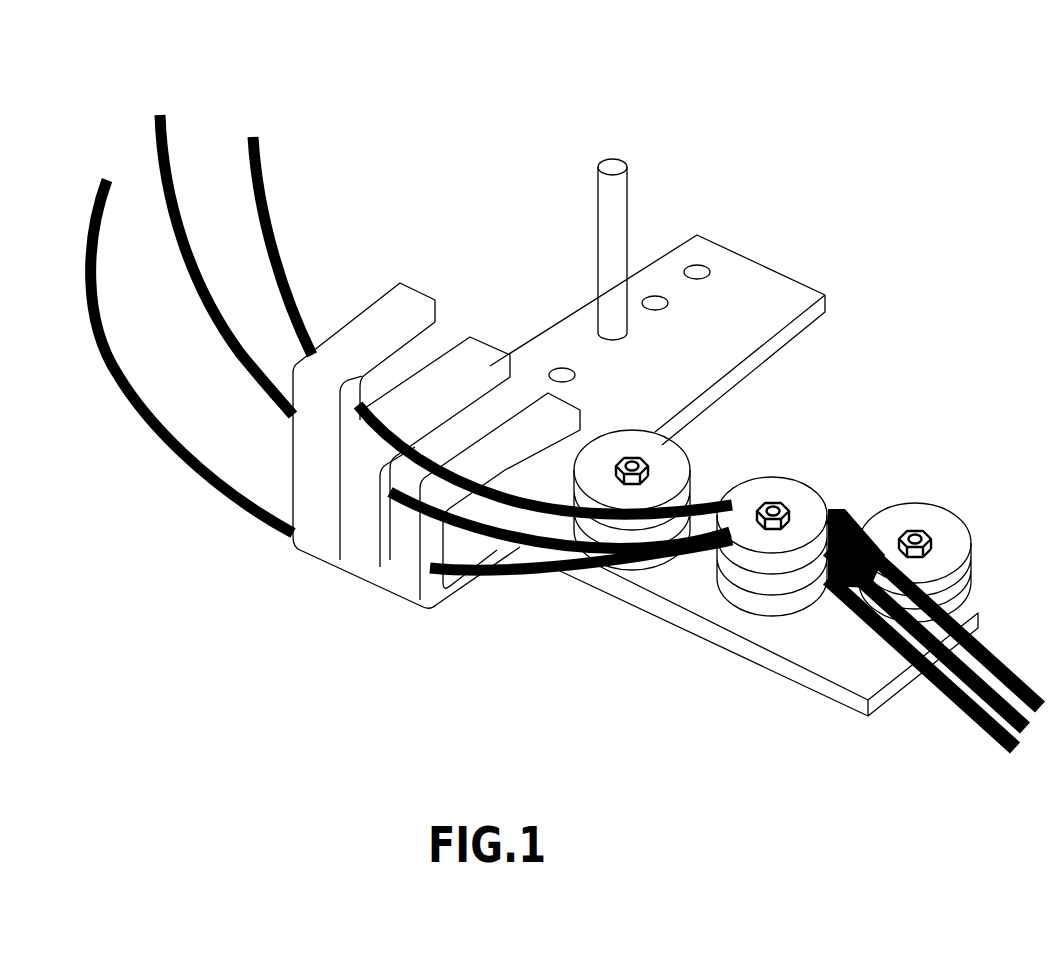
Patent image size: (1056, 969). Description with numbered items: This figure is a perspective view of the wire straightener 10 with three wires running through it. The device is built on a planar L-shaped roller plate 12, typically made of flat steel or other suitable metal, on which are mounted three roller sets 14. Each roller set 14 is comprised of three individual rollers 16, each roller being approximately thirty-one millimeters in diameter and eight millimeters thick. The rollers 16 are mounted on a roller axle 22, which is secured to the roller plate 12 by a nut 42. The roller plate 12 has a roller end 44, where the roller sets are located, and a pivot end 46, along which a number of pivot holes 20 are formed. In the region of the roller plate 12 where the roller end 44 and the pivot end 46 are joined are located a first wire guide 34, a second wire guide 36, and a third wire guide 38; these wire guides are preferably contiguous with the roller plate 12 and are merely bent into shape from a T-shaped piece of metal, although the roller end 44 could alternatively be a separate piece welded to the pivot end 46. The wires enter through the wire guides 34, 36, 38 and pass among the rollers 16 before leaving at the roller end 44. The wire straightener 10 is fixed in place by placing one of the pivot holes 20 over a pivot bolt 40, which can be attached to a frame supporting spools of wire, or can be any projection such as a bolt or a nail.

The wire straightener 10 is at (238, 212).
The roller plate 12 is at (848, 670).
The roller sets 14 is at (805, 553).
The rollers 16 is at (762, 607).
The pivot holes 20 is at (698, 270).
The roller axle 22 is at (932, 533).
The first wire guide 34 is at (403, 582).
The second wire guide 36 is at (362, 562).
The third wire guide 38 is at (311, 532).
The pivot bolt 40 is at (603, 212).
The nut 42 is at (935, 552).
The roller end 44 is at (896, 745).
The pivot end 46 is at (782, 288).